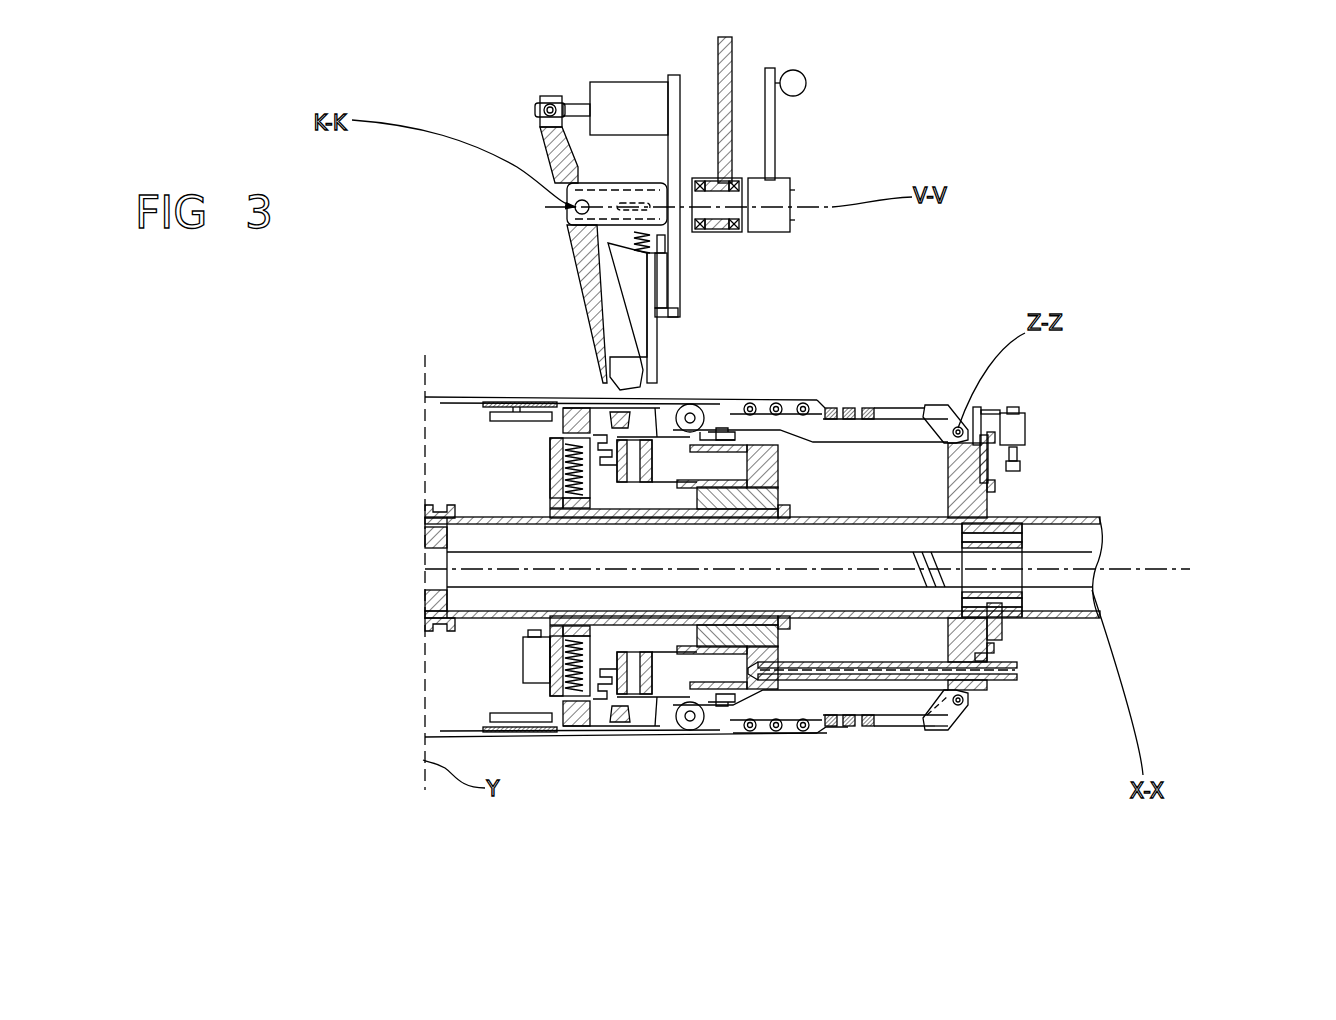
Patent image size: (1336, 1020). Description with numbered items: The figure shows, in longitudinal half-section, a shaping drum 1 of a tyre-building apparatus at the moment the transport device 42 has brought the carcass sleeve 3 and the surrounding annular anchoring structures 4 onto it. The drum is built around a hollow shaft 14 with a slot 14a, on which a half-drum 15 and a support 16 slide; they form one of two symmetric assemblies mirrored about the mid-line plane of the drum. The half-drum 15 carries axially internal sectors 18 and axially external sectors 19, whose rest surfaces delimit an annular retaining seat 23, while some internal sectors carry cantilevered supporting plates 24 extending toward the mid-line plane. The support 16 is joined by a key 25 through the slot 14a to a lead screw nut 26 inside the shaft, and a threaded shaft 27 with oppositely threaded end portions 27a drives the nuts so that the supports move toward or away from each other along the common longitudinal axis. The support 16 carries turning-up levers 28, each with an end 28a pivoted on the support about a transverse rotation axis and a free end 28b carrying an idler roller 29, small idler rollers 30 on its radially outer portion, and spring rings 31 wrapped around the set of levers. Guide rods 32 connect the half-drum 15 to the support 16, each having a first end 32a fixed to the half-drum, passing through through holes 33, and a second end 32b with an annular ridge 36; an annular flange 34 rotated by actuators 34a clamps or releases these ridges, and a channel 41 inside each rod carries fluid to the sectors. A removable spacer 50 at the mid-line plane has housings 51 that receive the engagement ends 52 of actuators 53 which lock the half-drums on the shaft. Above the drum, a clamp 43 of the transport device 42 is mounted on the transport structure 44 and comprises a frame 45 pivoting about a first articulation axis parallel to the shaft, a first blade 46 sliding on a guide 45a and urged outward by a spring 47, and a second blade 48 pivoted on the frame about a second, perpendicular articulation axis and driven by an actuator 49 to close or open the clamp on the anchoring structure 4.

The shaping drum 1 is at (1108, 226).
The carcass sleeve 3 is at (453, 393).
The annular anchoring structure 4 is at (597, 292).
The hollow shaft 14 is at (1100, 517).
The slot 14a is at (810, 520).
The half-drum 15 is at (756, 427).
The support 16 is at (985, 728).
The axially internal sectors 18 is at (595, 398).
The axially external sectors 19 is at (658, 413).
The annular retaining seat 23 is at (625, 408).
The supporting plates 24 is at (513, 396).
The key 25 is at (1062, 586).
The lead screw nut 26 is at (1013, 527).
The threaded shaft 27 is at (1005, 650).
The thread 27a is at (920, 555).
The turning-up lever 28 is at (884, 405).
The lever end 28a is at (952, 428).
The free end of lever 28b is at (712, 408).
The idler roller 29 is at (686, 412).
The small idler rollers 30 is at (803, 731).
The spring rings 31 is at (868, 408).
The guide rod 32 is at (913, 680).
The first end of guide rod 32a is at (826, 727).
The second end of guide rod 32b is at (962, 732).
The through holes 33 is at (948, 692).
The annular flange 34 is at (1023, 447).
The actuators 34a is at (1034, 414).
The annular ridge 36 is at (967, 705).
The channel 41 is at (882, 680).
The transport device 42 is at (940, 114).
The clamp 43 is at (718, 258).
The transport structure 44 is at (733, 52).
The frame 45 is at (673, 273).
The guide 45a is at (667, 313).
The first blade 46 is at (657, 333).
The spring 47 is at (792, 220).
The second blade 48 is at (576, 247).
The actuator 49 is at (610, 76).
The spacer 50 is at (437, 504).
The housings 51 is at (447, 511).
The engagement ends 52 is at (533, 630).
The actuators 53 is at (530, 665).